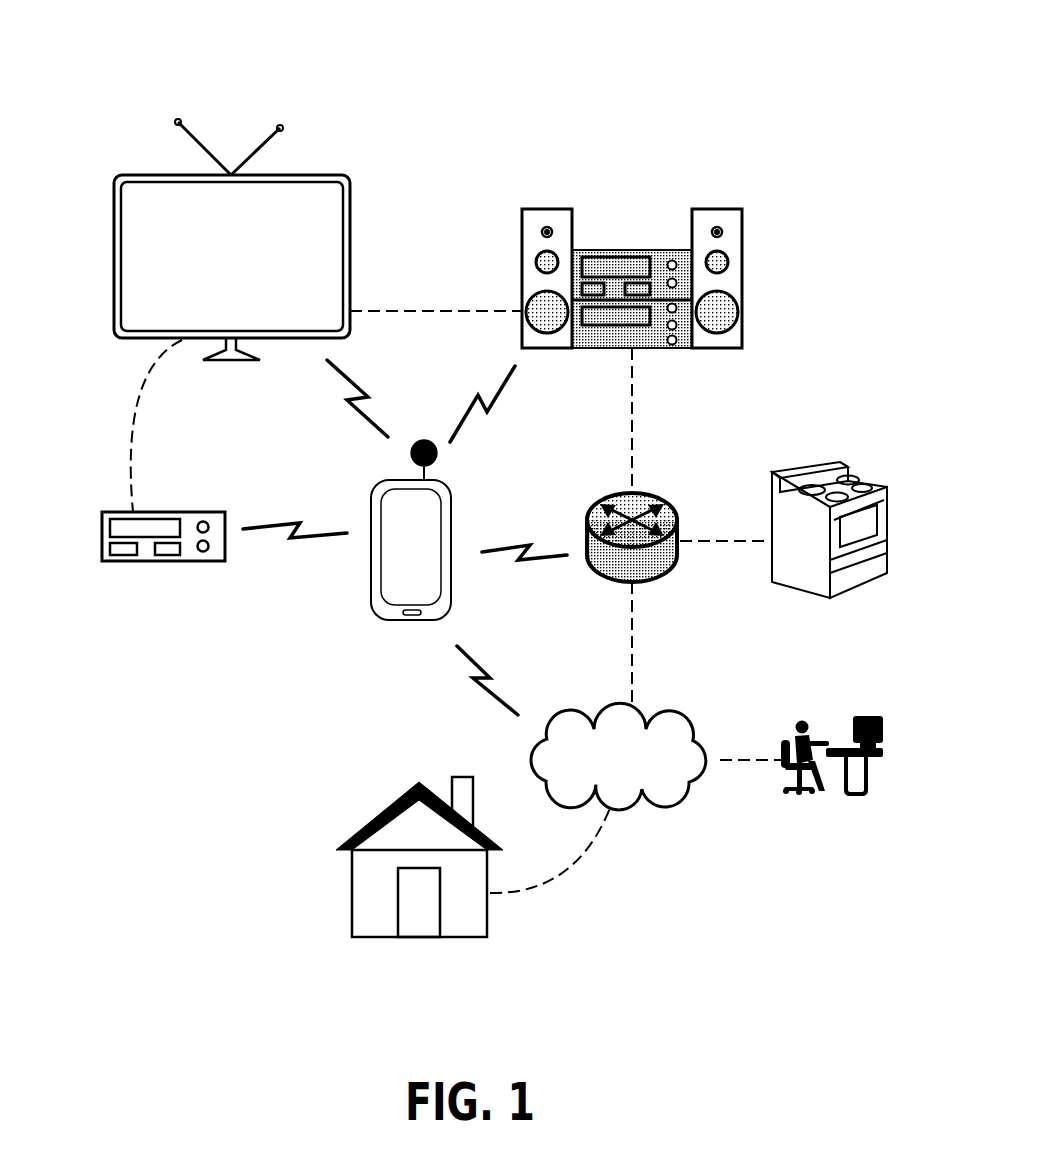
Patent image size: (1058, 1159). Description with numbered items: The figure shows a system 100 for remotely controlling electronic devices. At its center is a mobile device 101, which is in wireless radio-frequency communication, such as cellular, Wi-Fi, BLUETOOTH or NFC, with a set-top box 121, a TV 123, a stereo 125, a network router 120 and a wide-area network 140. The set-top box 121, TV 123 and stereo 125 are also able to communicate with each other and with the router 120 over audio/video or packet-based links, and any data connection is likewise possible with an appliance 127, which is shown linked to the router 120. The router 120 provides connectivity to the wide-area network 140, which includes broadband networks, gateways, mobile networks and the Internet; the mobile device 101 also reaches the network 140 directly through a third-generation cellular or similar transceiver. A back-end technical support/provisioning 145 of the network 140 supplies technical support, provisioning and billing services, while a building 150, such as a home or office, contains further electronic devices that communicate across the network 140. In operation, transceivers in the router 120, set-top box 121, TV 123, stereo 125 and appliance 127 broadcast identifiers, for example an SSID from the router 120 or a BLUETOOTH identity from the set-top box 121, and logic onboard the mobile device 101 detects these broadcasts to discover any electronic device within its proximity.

The system 100 is at (502, 472).
The mobile device 101 is at (346, 528).
The network router 120 is at (668, 518).
The set-top box 121 is at (137, 560).
The TV 123 is at (196, 239).
The stereo 125 is at (690, 259).
The appliance 127 is at (862, 501).
The wide-area network 140 is at (618, 756).
The technical support/provisioning 145 is at (871, 737).
The building 150 is at (367, 852).